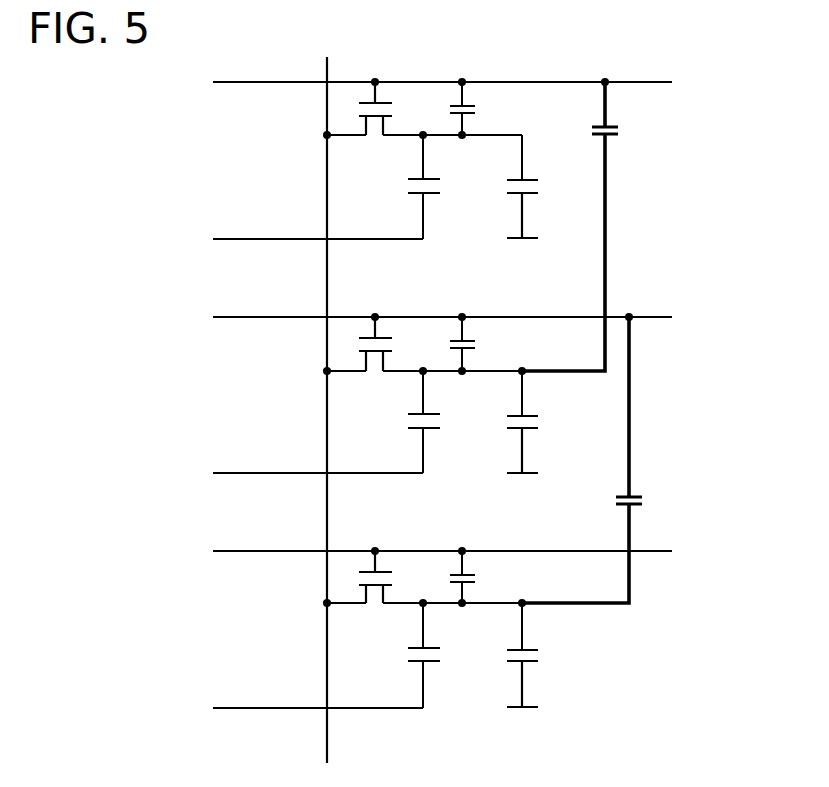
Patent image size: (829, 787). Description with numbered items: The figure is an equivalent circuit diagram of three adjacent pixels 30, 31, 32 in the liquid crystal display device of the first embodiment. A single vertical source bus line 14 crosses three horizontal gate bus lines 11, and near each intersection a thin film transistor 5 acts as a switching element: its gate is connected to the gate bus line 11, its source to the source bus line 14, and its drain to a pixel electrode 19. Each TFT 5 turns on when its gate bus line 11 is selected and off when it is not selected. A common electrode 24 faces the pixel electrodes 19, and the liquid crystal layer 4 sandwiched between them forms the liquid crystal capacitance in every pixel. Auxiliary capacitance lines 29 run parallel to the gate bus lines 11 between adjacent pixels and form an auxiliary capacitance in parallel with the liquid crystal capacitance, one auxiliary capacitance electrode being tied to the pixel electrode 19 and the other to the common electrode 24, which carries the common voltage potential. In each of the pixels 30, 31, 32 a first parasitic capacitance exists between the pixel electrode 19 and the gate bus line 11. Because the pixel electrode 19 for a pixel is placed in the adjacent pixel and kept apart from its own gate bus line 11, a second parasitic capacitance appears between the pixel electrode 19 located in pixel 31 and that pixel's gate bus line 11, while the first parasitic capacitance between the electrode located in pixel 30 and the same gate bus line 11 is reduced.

The liquid crystal layer 4 is at (504, 194).
The thin film transistor 5 is at (376, 140).
The gate bus line 11 is at (266, 80).
The source bus line 14 is at (330, 58).
The pixel electrode 19 is at (532, 179).
The common electrode 24 is at (532, 196).
The auxiliary capacitance line 29 is at (383, 242).
The pixel 30 is at (644, 197).
The pixel 31 is at (644, 438).
The pixel 32 is at (644, 661).